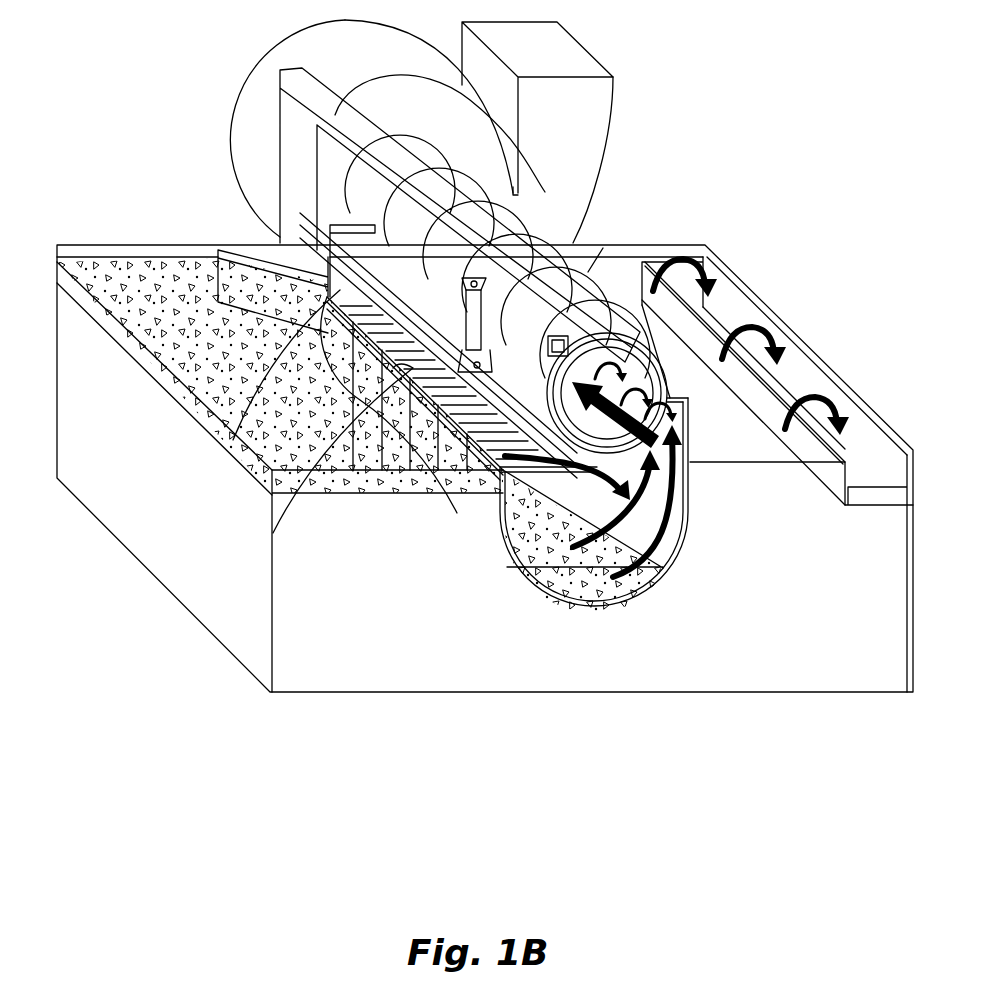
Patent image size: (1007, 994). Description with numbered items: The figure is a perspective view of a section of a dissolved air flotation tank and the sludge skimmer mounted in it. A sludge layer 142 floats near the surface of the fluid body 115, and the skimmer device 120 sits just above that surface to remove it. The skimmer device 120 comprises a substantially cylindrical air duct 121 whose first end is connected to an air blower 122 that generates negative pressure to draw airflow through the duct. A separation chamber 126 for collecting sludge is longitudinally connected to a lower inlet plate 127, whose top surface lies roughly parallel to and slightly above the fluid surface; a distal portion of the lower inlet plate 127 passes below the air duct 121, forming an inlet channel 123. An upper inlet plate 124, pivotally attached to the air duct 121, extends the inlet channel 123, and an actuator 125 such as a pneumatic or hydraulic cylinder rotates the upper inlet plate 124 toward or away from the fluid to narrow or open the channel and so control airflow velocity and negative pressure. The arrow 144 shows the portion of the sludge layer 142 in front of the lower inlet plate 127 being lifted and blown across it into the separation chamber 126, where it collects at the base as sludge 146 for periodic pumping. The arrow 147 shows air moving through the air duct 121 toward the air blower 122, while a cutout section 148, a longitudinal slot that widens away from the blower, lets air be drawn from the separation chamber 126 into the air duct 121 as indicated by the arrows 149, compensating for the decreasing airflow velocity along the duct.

The fluid body 115 is at (118, 445).
The skimmer device 120 is at (588, 277).
The air duct 121 is at (517, 253).
The air blower 122 is at (592, 97).
The inlet channel 123 is at (273, 533).
The upper inlet plate 124 is at (300, 217).
The actuator 125 is at (428, 290).
The separation chamber 126 is at (490, 520).
The lower inlet plate 127 is at (235, 440).
The sludge layer 142 is at (148, 362).
The arrow indicating sludge movement 144 is at (513, 543).
The sludge 146 is at (570, 580).
The arrow indicating airflow direction 147 is at (655, 475).
The cutout section 148 is at (663, 385).
The arrows indicating air drawn into air duct 149 is at (650, 355).